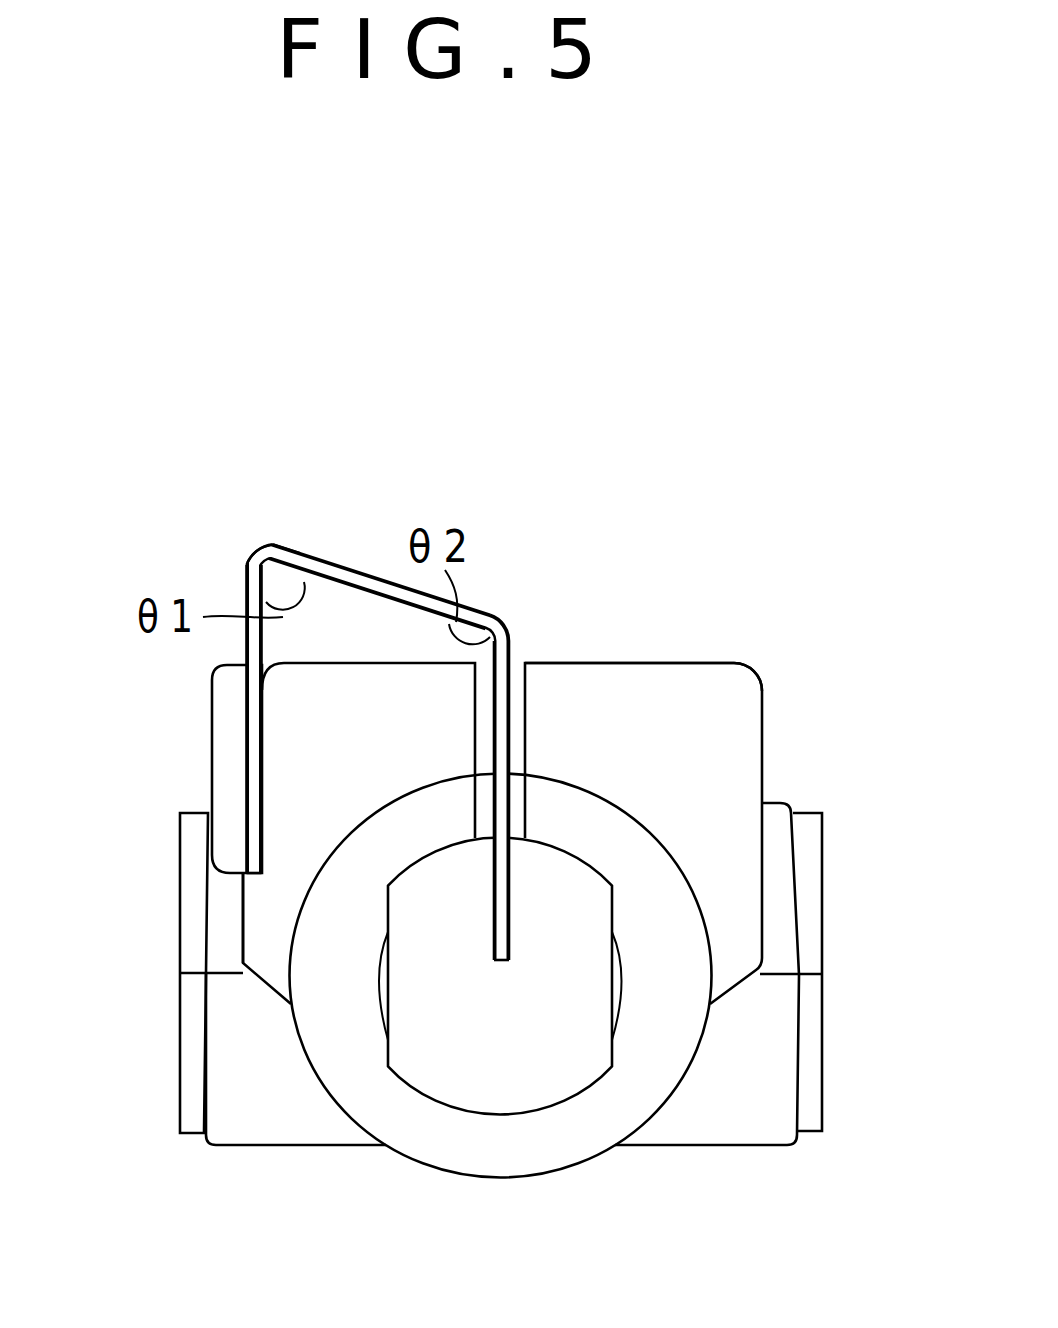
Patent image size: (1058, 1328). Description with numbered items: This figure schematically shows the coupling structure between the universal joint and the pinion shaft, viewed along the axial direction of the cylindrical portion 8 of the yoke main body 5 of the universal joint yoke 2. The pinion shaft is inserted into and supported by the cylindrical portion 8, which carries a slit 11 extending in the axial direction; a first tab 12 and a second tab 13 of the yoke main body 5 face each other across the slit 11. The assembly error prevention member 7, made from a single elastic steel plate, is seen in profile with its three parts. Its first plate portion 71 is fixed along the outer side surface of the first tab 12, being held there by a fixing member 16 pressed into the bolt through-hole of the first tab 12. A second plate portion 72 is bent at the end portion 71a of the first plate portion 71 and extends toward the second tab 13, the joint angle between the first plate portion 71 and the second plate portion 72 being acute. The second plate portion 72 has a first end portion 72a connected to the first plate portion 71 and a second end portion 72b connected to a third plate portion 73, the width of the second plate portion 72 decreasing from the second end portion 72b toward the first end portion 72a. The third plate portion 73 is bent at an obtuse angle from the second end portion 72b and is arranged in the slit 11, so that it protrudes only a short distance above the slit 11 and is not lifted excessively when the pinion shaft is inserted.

The universal joint yoke 2 is at (782, 782).
The yoke main body 5 is at (763, 690).
The assembly error prevention member 7 is at (244, 778).
The cylindrical portion 8 is at (532, 1157).
The slit 11 is at (519, 666).
The first tab 12 is at (307, 810).
The second tab 13 is at (745, 747).
The fixing member 16 is at (213, 738).
The first plate portion 71 is at (245, 693).
The end portion of the first plate portion 71a is at (245, 583).
The second plate portion 72 is at (365, 575).
The first end portion of the second plate portion 72a is at (294, 551).
The second end portion of the second plate portion 72b is at (486, 612).
The third plate portion 73 is at (515, 743).